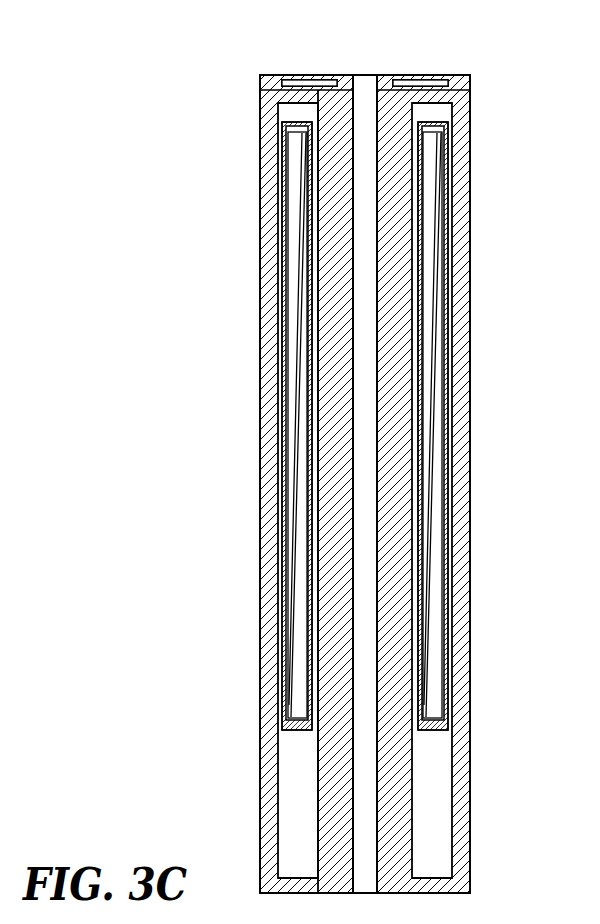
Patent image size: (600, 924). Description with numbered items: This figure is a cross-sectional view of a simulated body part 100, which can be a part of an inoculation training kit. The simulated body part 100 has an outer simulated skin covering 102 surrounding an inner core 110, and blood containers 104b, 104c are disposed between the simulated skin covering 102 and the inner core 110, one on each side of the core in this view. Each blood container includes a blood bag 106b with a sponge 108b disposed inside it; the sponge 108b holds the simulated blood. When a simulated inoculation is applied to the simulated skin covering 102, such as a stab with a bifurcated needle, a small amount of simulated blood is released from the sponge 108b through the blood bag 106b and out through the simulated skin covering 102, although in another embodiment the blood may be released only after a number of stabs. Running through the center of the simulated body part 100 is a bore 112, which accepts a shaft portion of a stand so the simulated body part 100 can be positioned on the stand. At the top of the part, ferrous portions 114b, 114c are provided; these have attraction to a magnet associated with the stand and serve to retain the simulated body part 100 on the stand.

The simulated body part 100 is at (260, 118).
The simulated skin covering 102 is at (260, 300).
The blood container 104b is at (447, 533).
The blood container 104c is at (287, 537).
The blood bag 106b is at (285, 578).
The sponge 108b is at (297, 637).
The inner core 110 is at (335, 368).
The bore 112 is at (360, 207).
The ferrous portion 114b is at (417, 82).
The ferrous portion 114c is at (307, 80).